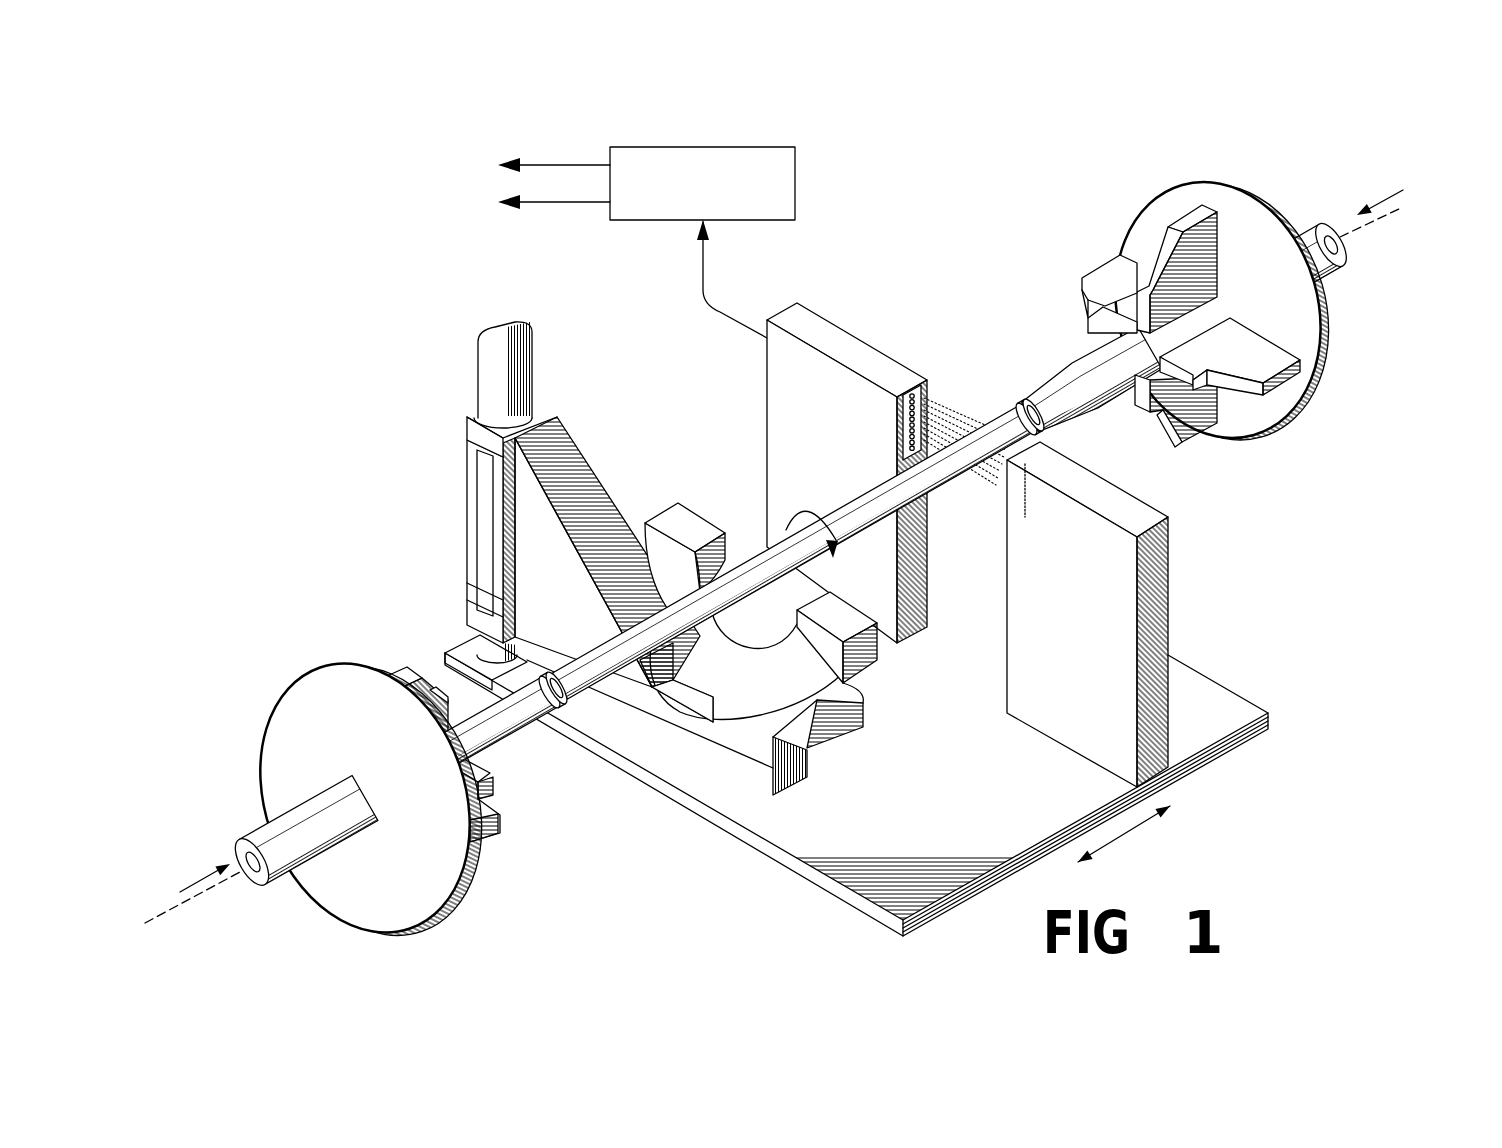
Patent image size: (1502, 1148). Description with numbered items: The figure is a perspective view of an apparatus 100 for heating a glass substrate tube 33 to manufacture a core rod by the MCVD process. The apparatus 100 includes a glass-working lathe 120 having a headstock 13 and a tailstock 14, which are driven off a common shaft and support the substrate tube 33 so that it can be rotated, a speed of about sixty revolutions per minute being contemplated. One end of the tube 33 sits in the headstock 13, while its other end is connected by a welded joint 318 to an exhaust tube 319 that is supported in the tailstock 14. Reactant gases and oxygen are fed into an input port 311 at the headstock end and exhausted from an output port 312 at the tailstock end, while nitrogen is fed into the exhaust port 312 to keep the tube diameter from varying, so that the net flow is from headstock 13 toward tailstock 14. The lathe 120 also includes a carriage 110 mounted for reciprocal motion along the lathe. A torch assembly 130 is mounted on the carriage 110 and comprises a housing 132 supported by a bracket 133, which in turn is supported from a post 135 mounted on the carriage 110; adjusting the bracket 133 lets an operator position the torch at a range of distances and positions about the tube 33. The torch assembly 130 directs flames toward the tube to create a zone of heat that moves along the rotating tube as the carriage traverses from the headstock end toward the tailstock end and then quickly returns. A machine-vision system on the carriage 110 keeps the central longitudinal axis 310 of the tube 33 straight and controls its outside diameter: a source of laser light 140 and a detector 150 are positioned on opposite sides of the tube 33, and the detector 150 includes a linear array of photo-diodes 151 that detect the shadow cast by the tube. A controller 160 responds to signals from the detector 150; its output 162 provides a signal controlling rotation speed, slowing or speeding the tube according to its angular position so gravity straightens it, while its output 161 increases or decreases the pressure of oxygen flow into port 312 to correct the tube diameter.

The apparatus 100 is at (907, 215).
The carriage 110 is at (1255, 703).
The glass-working lathe 120 is at (396, 665).
The headstock 13 is at (1125, 238).
The tailstock 14 is at (273, 719).
The torch assembly 130 is at (666, 496).
The housing 132 is at (870, 667).
The bracket 133 is at (552, 452).
The post 135 is at (487, 376).
The source of laser light 140 is at (1170, 587).
The detector 150 is at (773, 398).
The linear array of photo-diodes 151 is at (928, 386).
The controller 160 is at (703, 147).
The output 161 is at (579, 162).
The output 162 is at (579, 206).
The central longitudinal axis 310 is at (183, 910).
The input port 311 is at (1343, 247).
The output port 312 is at (248, 876).
The welded joint 318 is at (562, 672).
The exhaust tube 319 is at (520, 740).
The glass substrate tube 33 is at (870, 493).